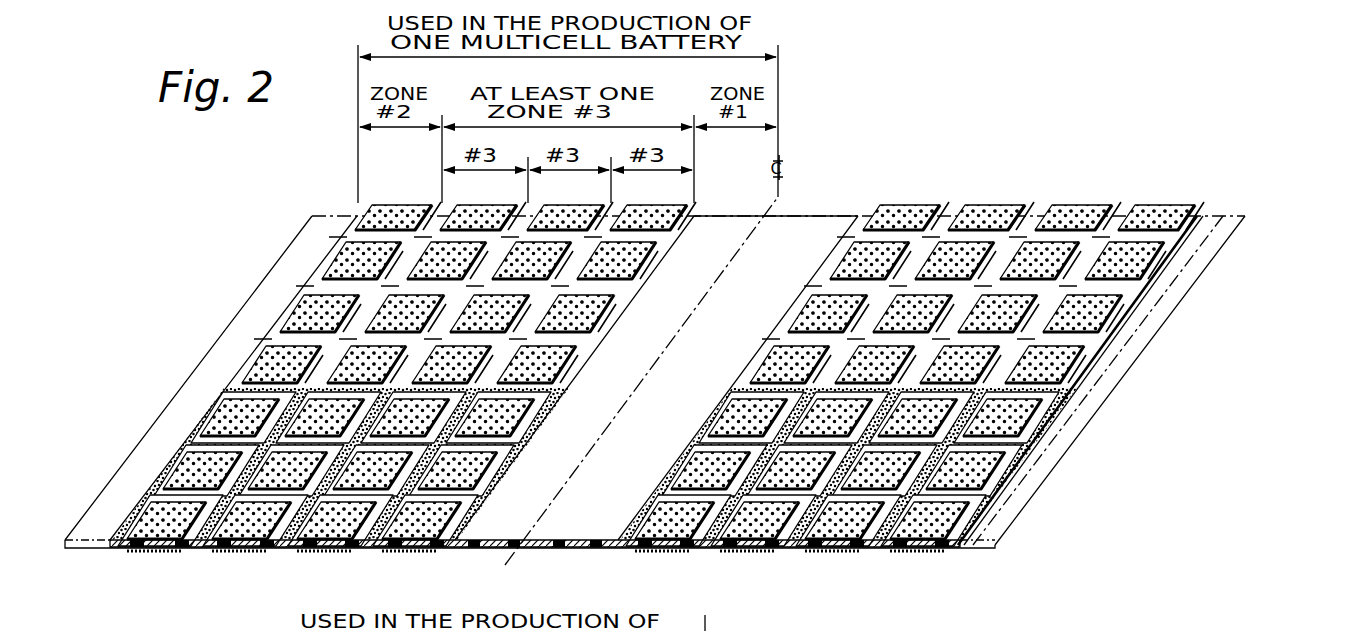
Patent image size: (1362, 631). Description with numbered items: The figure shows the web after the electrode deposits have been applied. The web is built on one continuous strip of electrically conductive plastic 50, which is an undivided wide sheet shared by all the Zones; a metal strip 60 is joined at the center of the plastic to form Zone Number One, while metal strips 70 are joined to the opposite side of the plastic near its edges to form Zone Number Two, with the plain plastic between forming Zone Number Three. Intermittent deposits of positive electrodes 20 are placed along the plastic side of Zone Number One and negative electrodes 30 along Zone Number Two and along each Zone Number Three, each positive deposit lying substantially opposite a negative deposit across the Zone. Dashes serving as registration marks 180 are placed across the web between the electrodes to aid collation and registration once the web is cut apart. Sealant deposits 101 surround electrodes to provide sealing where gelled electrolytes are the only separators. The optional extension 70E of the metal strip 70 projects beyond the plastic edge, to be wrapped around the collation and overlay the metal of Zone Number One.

The positive electrode 20 is at (512, 550).
The negative electrode 30 is at (348, 255).
The continuous strip of electrically conductive plastic 50 is at (1048, 160).
The metal strip 60 is at (794, 216).
The metal strip 70 is at (147, 549).
The extension of the metal strip 70E is at (192, 402).
The sealant deposits 101 is at (1058, 398).
The registration marks 180 is at (1050, 289).